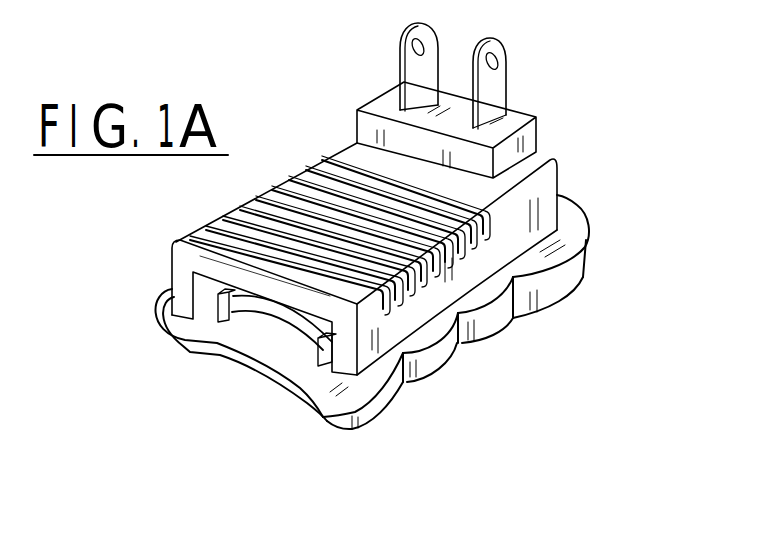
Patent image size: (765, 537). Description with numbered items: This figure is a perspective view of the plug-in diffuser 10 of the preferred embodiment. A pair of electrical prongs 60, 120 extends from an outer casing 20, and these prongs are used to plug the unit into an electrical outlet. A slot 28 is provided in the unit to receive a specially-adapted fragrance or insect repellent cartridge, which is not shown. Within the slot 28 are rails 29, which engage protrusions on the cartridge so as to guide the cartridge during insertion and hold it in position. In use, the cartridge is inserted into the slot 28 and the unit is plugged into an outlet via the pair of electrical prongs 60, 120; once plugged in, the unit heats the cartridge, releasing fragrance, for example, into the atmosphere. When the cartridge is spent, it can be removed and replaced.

The plug-in diffuser 10 is at (536, 316).
The outer casing 20 is at (528, 198).
The slot 28 is at (288, 322).
The rails 29 is at (187, 342).
The electrical prong 60 is at (508, 46).
The electrical prong 120 is at (400, 43).